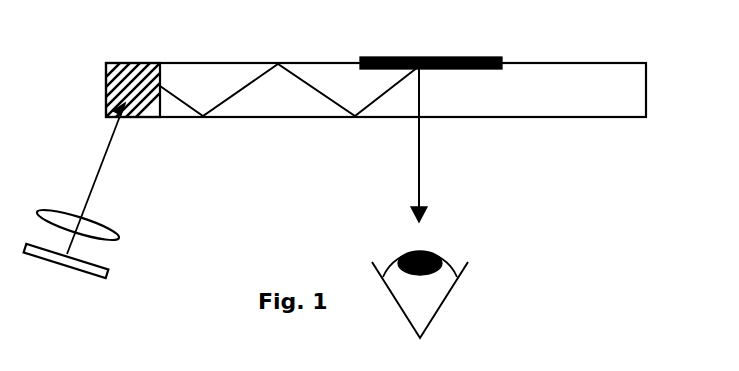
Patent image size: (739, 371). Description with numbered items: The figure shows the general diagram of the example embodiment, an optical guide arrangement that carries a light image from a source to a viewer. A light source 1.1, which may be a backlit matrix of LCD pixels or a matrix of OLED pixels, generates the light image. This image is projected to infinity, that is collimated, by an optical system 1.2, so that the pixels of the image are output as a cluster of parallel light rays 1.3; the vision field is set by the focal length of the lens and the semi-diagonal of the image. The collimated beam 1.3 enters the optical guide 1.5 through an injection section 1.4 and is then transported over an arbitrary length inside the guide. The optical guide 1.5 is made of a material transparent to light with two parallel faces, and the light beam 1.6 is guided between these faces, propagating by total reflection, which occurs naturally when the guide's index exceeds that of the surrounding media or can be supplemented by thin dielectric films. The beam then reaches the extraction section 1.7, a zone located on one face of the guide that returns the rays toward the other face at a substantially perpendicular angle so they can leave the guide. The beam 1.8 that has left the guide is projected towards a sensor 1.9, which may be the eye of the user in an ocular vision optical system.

The light source 1.1 is at (108, 268).
The optical system 1.2 is at (97, 222).
The collimated beam 1.3 is at (100, 163).
The injection section 1.4 is at (127, 63).
The optical guide 1.5 is at (218, 62).
The light beam 1.6 is at (324, 96).
The extraction section 1.7 is at (413, 56).
The beam that has left the guide 1.8 is at (420, 160).
The sensor 1.9 is at (458, 290).